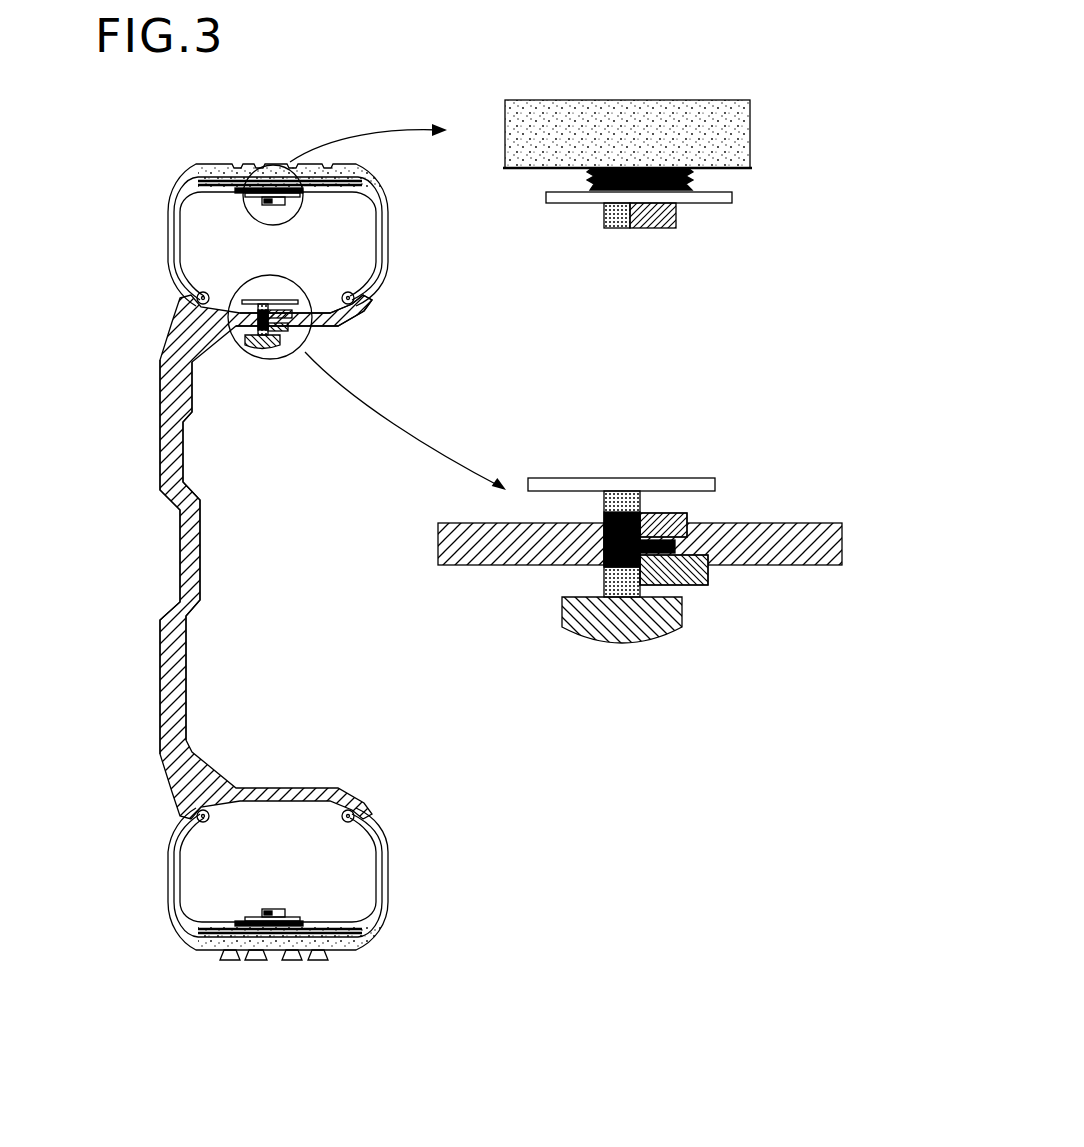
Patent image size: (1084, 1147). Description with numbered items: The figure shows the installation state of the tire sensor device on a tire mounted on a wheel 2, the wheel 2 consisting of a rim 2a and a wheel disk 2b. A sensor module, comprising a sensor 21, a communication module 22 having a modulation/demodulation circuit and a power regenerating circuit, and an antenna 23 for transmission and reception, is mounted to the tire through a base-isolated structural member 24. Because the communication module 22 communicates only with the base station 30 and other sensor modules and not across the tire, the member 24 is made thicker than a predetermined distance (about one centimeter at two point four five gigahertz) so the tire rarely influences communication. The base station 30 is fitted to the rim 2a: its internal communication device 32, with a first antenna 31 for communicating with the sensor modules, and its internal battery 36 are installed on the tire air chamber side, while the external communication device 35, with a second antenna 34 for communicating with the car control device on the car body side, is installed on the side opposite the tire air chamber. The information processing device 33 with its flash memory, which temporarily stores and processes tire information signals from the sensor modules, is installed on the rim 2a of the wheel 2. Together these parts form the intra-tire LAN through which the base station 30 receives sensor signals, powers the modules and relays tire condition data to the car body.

The wheel 2 is at (160, 366).
The rim 2a is at (795, 540).
The wheel disk 2b is at (202, 511).
The sensor 21 is at (655, 228).
The communication module 22 is at (612, 228).
The antenna 23 is at (570, 197).
The base-isolated structural member 24 is at (660, 168).
The base station 30 is at (240, 303).
The first antenna 31 is at (665, 478).
The internal communication device 32 is at (600, 503).
The information processing device 33 is at (702, 578).
The second antenna 34 is at (605, 545).
The external communication device 35 is at (605, 586).
The internal battery 36 is at (681, 514).